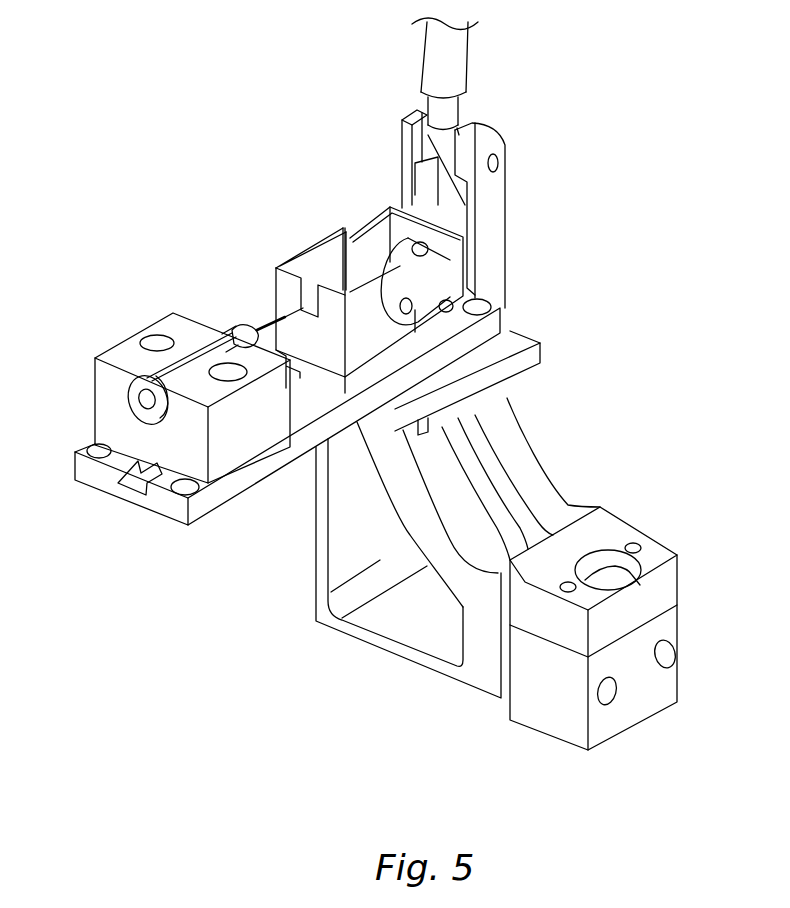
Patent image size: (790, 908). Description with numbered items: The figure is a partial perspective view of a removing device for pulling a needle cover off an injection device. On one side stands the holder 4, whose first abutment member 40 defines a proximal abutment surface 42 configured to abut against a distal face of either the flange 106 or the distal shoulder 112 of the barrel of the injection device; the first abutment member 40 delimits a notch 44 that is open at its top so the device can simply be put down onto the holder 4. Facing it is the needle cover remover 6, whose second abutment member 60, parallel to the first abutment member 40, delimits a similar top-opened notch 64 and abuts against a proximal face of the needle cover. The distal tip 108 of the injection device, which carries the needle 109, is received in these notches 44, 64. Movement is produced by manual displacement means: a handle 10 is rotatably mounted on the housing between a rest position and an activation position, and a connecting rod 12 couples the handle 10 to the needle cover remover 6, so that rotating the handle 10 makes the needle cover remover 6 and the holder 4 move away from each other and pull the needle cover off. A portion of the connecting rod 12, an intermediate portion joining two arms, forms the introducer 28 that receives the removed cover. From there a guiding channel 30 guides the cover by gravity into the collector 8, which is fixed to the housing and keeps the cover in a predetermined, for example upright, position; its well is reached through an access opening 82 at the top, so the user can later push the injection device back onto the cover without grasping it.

The handle 10 is at (438, 55).
The needle cover remover 6 is at (325, 289).
The notch 64 is at (325, 289).
The second abutment member 60 is at (313, 280).
The needle 109 is at (262, 333).
The distal shoulder 112 is at (227, 326).
The flange 106 is at (130, 396).
The notch 44 is at (128, 407).
The first abutment member 40 is at (280, 420).
The proximal abutment surface 42 is at (143, 433).
The holder 4 is at (226, 460).
The distal tip 108 is at (250, 336).
The connecting rod 12 is at (492, 221).
The introducer 28 is at (428, 232).
The access opening 82 is at (633, 573).
The collector 8 is at (683, 677).
The guiding channel 30 is at (505, 510).